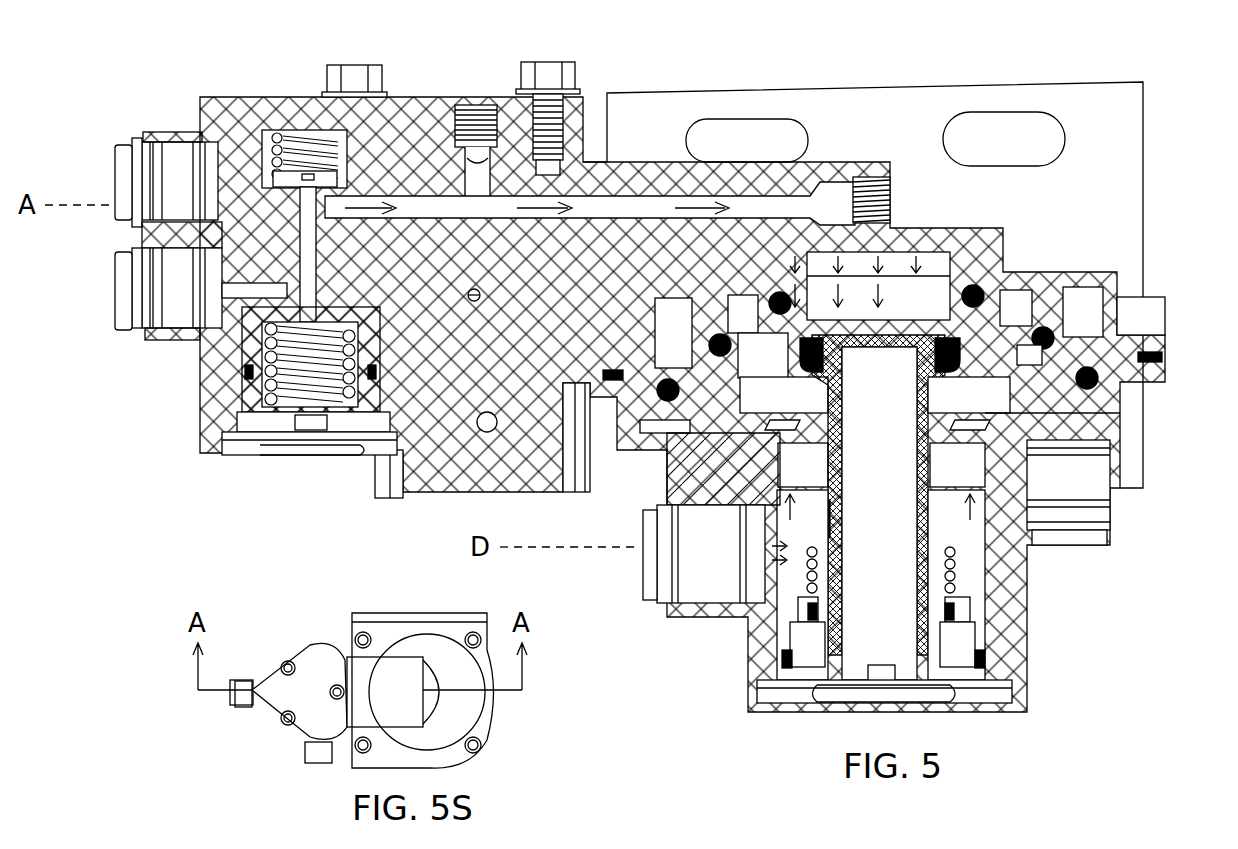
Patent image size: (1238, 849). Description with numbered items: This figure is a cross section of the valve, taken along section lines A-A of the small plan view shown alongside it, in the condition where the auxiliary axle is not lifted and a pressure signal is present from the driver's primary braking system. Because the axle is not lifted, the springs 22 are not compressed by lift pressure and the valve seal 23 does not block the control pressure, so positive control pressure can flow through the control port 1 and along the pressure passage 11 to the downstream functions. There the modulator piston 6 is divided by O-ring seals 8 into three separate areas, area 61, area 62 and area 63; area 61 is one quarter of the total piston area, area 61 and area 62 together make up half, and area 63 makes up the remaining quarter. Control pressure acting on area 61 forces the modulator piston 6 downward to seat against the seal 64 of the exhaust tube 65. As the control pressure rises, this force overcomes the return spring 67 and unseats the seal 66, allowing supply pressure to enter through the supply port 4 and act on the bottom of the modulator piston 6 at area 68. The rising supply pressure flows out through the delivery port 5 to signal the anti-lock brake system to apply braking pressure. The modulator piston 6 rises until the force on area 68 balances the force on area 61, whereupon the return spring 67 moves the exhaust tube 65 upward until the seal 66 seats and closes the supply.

The control port 1 is at (118, 168).
The supply port 4 is at (642, 577).
The delivery port 5 is at (1090, 543).
The modulator piston 6 is at (1073, 410).
The O-ring seals 8 is at (672, 378).
The pressure passage 11 is at (808, 228).
The springs 22 is at (348, 420).
The valve seal 23 is at (275, 130).
The area 61 is at (938, 282).
The area 62 is at (1000, 340).
The area 63 is at (1122, 312).
The seal 64 is at (957, 347).
The exhaust tube 65 is at (898, 493).
The seal 66 is at (962, 515).
The return spring 67 is at (800, 583).
The area 68 is at (665, 442).